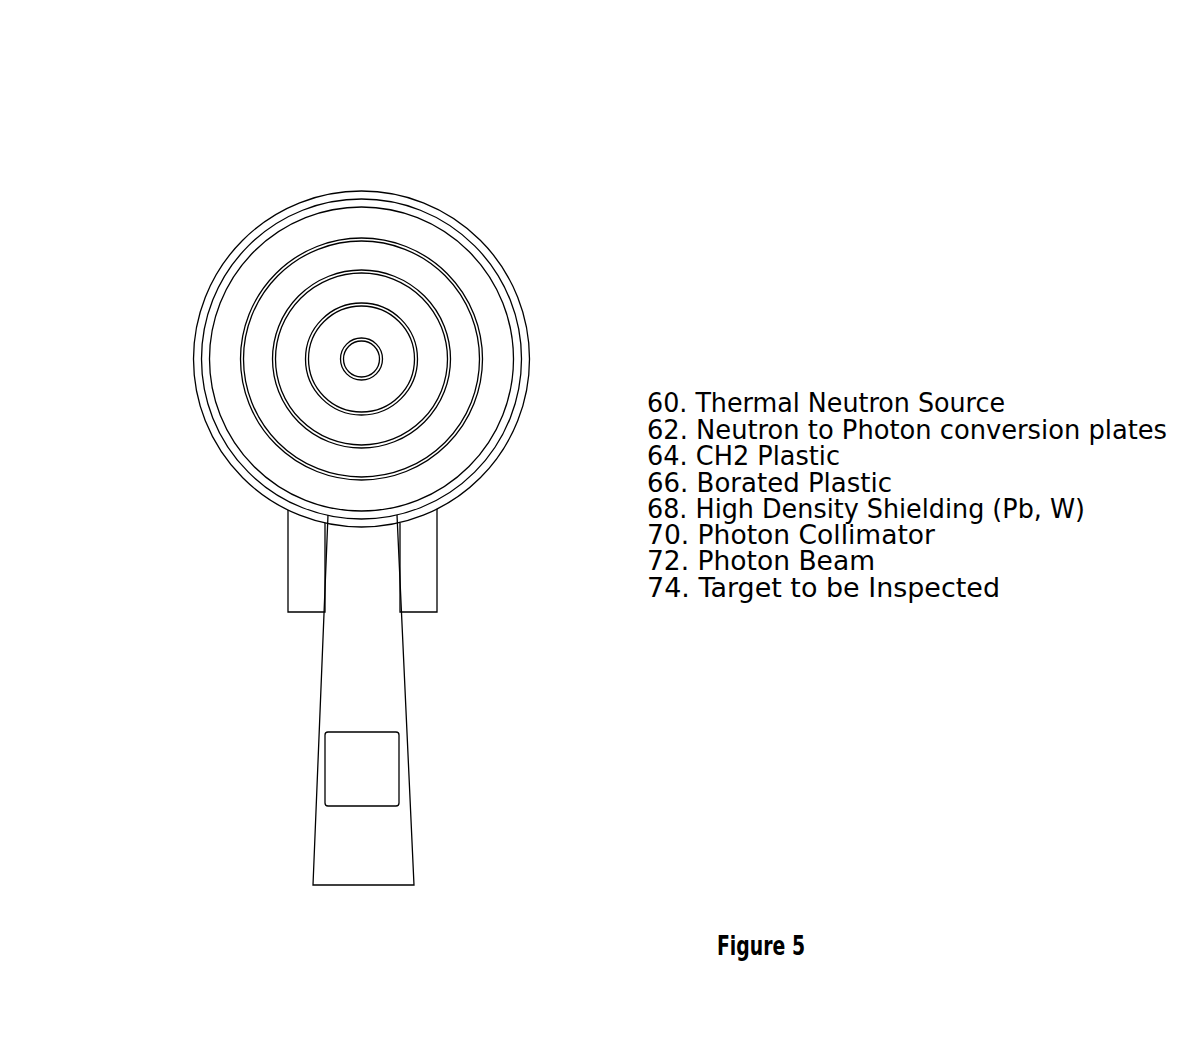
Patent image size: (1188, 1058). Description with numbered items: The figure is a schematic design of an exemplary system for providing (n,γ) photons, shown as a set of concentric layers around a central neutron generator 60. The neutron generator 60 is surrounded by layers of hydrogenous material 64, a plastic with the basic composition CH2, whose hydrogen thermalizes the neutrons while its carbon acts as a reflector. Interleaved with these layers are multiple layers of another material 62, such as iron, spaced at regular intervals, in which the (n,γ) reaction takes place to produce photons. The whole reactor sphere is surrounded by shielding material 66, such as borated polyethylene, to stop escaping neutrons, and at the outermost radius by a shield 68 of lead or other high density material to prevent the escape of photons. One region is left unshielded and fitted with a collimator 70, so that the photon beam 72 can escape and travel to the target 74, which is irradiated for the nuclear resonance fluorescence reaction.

The neutron generator 60 is at (468, 319).
The reaction material layers 62 is at (416, 294).
The hydrogenous material 64 is at (257, 222).
The shielding material 66 is at (401, 290).
The shield 68 is at (340, 298).
The collimator 70 is at (412, 560).
The photon beam 72 is at (407, 700).
The target 74 is at (414, 766).